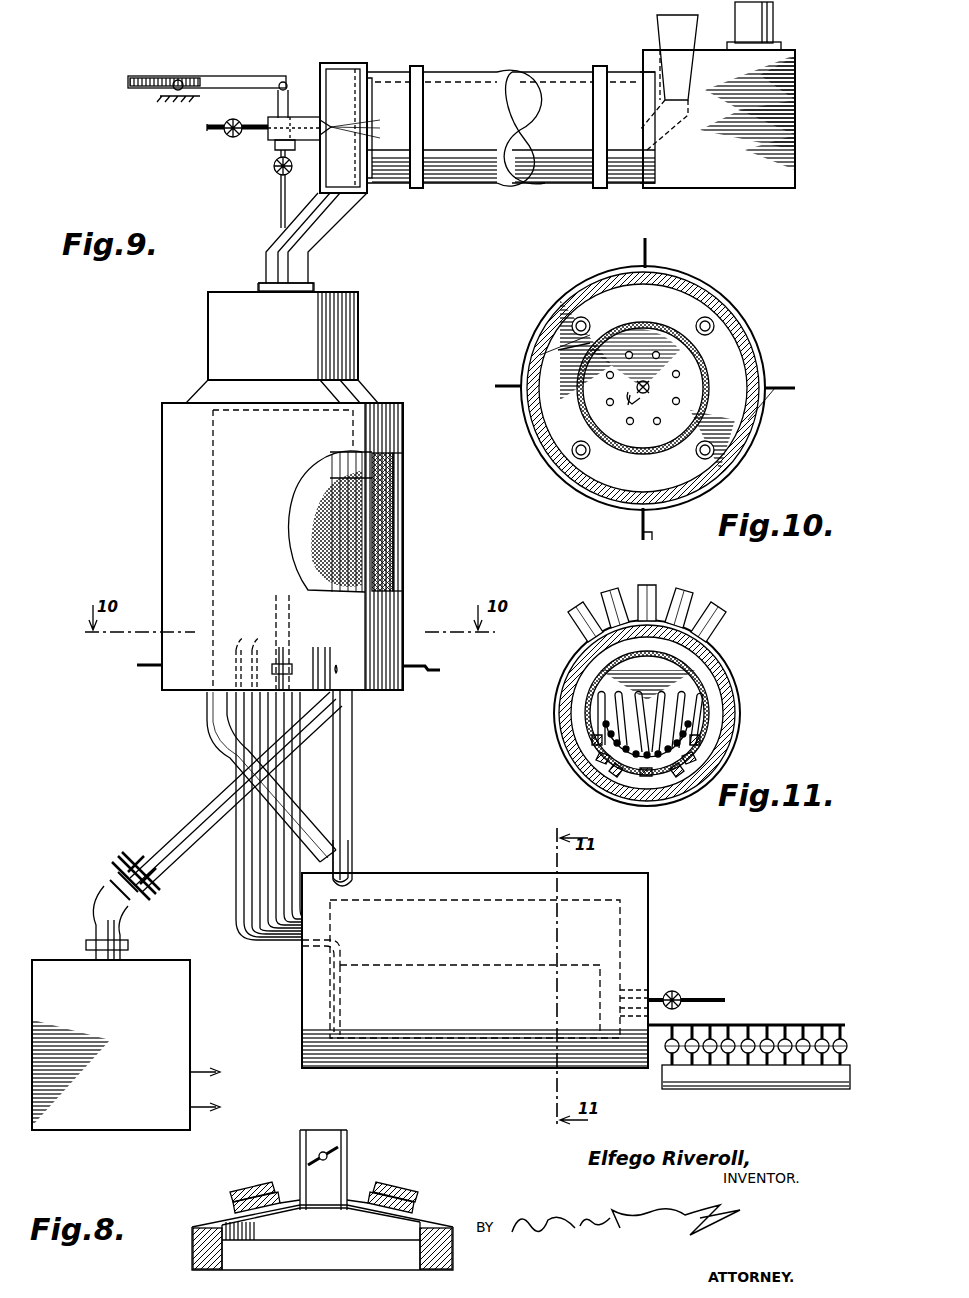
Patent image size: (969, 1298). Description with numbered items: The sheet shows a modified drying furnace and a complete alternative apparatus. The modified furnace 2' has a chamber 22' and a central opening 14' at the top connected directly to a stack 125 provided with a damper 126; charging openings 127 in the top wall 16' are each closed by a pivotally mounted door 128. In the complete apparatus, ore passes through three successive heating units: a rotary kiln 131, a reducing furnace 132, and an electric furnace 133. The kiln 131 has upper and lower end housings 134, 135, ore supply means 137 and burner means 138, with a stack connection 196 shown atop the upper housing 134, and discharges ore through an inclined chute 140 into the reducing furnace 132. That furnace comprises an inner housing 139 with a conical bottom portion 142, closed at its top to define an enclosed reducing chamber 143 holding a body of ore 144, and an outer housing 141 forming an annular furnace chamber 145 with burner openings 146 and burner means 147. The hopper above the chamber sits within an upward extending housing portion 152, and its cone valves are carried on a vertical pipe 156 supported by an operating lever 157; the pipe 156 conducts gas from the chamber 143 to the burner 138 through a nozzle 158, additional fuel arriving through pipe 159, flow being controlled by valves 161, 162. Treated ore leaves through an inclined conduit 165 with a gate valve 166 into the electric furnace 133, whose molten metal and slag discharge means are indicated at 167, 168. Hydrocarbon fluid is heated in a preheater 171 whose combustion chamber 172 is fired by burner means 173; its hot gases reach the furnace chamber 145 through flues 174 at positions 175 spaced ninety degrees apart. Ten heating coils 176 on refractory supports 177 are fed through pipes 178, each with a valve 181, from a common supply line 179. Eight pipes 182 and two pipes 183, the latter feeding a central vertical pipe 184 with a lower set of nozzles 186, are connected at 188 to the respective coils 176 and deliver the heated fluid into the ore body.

In FIG. 9, the operating lever 157 is at (236, 80).
In FIG. 9, the valve 162 is at (230, 122).
In FIG. 9, the pipe 159 is at (213, 135).
In FIG. 9, the burner means 138 is at (302, 116).
In FIG. 9, the nozzle or opening 158 is at (280, 143).
In FIG. 9, the vertical pipe 156 is at (280, 204).
In FIG. 9, the valve 161 is at (274, 170).
In FIG. 9, the lower end housing 135 is at (345, 62).
In FIG. 9, the rotary kiln 131 is at (470, 72).
In FIG. 9, the upper end housing 134 is at (719, 119).
In FIG. 9, the ore supply means 137 is at (658, 22).
In FIG. 9, the nozzle 196 is at (773, 22).
In FIG. 9, the inclined chute 140 is at (312, 234).
In FIG. 9, the upward extending portion of the furnace housing 152 is at (355, 338).
In FIG. 9, the reducing furnace 132 is at (178, 490).
In FIG. 9, the reducing chamber 143 is at (330, 474).
In FIG. 9, the inner housing 139 is at (356, 497).
In FIG. 10, the inner housing 139 is at (706, 360).
In FIG. 9, the body of ore 144 is at (340, 488).
In FIG. 9, the outer housing 141 is at (395, 528).
In FIG. 10, the outer housing 141 is at (548, 450).
In FIG. 9, the annular furnace chamber 145 is at (362, 562).
In FIG. 9, the centrally disposed vertical pipe 184 is at (277, 602).
In FIG. 10, the centrally disposed vertical pipe 184 is at (650, 383).
In FIG. 9, the pipes 182 is at (247, 651).
In FIG. 10, the pipes 182 is at (556, 352).
In FIG. 9, the burner openings 146 is at (290, 660).
In FIG. 10, the burner openings 146 is at (772, 378).
In FIG. 9, the burner means 147 is at (137, 665).
In FIG. 10, the burner means 147 is at (502, 388).
In FIG. 9, the conical bottom portion 142 is at (352, 718).
In FIG. 9, the conduits or flues 174 is at (340, 830).
In FIG. 11, the conduits or flues 174 is at (700, 625).
In FIG. 9, the inclined conduit or chute 165 is at (212, 792).
In FIG. 9, the gate valve 166 is at (128, 862).
In FIG. 9, the electric furnace 133 is at (111, 1045).
In FIG. 9, the slag discharge means 168 is at (194, 1070).
In FIG. 9, the molten metal discharge means 167 is at (194, 1110).
In FIG. 9, the pipes 183 is at (272, 890).
In FIG. 10, the pipes 183 is at (650, 392).
In FIG. 9, the fluid preheating means 171 is at (495, 872).
In FIG. 11, the fluid preheating means 171 is at (556, 700).
In FIG. 9, the combustion chamber 172 is at (622, 922).
In FIG. 9, the heating coils 176 is at (538, 964).
In FIG. 11, the heating coils 176 is at (628, 800).
In FIG. 9, the burner means 173 is at (662, 998).
In FIG. 9, the pipes 178 is at (752, 1025).
In FIG. 9, the valve 181 is at (792, 1025).
In FIG. 9, the common fluid supply line 179 is at (758, 1076).
In FIG. 10, the flue positions 175 is at (712, 318).
In FIG. 10, the lower set of nozzles 186 is at (645, 400).
In FIG. 11, the connections 188 is at (680, 700).
In FIG. 11, the refractory supporting means 177 is at (610, 772).
In FIG. 8, the stack 125 is at (348, 1140).
In FIG. 8, the damper 126 is at (340, 1152).
In FIG. 8, the furnace 2' is at (296, 1237).
In FIG. 8, the top wall 16' is at (220, 1209).
In FIG. 8, the central opening 14' is at (326, 1232).
In FIG. 8, the chamber 22' is at (421, 1234).
In FIG. 8, the charging openings 127 is at (240, 1200).
In FIG. 8, the door 128 is at (262, 1190).